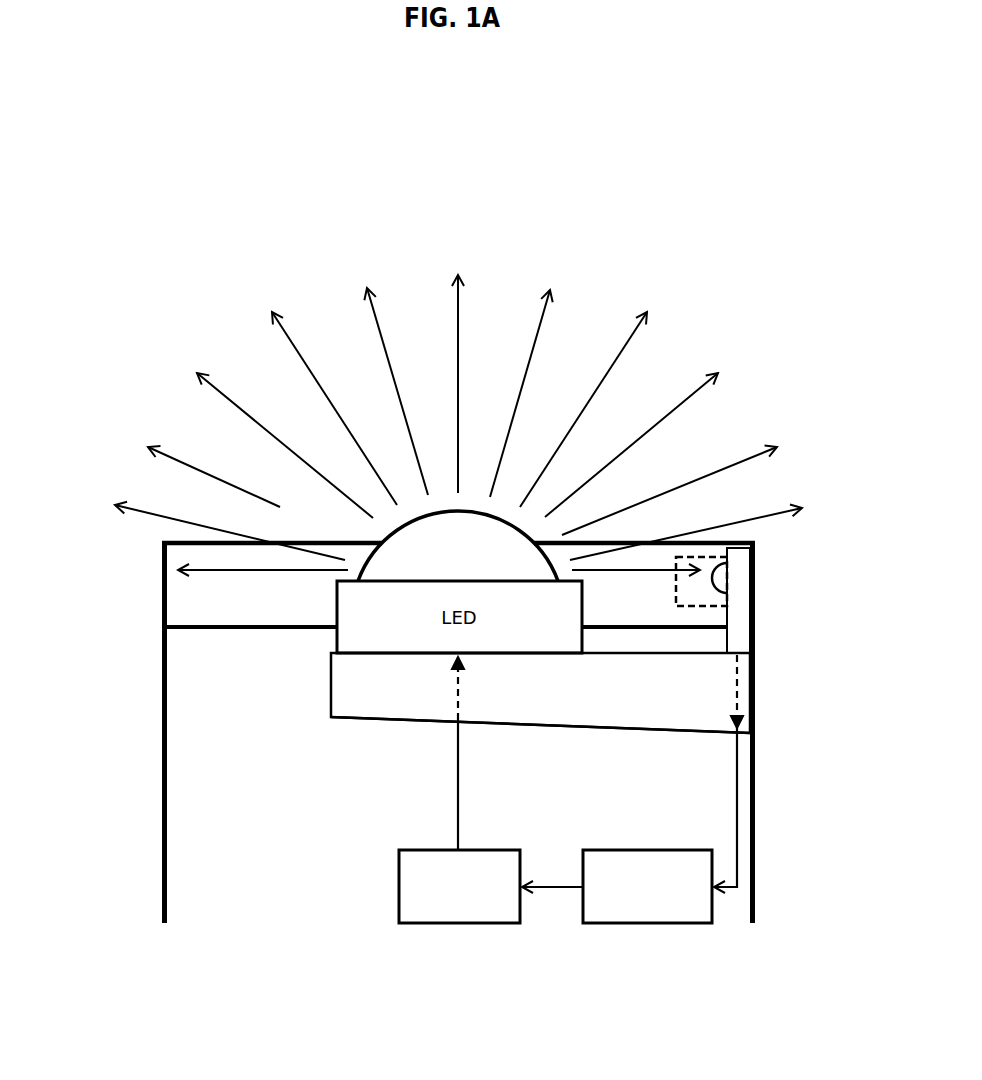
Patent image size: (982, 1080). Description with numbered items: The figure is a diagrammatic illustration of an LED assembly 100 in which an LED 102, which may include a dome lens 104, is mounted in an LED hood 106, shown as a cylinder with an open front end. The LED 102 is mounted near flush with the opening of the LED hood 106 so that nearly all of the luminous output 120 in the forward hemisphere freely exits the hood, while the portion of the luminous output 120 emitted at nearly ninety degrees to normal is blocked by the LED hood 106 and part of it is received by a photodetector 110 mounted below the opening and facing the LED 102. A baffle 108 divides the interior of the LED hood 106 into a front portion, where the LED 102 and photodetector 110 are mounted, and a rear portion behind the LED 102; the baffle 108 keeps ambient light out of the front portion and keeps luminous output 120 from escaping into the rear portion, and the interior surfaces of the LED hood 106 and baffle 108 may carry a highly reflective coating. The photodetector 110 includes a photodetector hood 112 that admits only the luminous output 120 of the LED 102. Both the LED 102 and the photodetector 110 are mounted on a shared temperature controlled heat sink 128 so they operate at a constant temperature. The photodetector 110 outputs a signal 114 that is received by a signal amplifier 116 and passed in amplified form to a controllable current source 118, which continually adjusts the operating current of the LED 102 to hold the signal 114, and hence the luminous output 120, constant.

The LED assembly 100 is at (110, 307).
The LED 102 is at (331, 652).
The dome lens 104 is at (378, 536).
The LED hood 106 is at (162, 560).
The baffle 108 is at (240, 632).
The photodetector 110 is at (745, 595).
The photodetector hood 112 is at (718, 605).
The signal 114 is at (742, 787).
The signal amplifier 116 is at (625, 848).
The controllable current source 118 is at (437, 848).
The luminous output 120 is at (248, 572).
The heat sink 128 is at (550, 728).